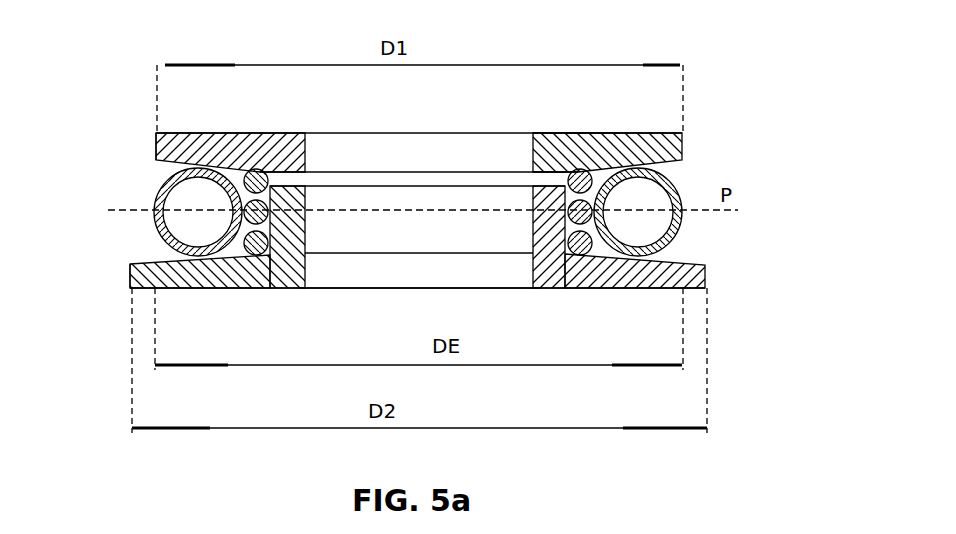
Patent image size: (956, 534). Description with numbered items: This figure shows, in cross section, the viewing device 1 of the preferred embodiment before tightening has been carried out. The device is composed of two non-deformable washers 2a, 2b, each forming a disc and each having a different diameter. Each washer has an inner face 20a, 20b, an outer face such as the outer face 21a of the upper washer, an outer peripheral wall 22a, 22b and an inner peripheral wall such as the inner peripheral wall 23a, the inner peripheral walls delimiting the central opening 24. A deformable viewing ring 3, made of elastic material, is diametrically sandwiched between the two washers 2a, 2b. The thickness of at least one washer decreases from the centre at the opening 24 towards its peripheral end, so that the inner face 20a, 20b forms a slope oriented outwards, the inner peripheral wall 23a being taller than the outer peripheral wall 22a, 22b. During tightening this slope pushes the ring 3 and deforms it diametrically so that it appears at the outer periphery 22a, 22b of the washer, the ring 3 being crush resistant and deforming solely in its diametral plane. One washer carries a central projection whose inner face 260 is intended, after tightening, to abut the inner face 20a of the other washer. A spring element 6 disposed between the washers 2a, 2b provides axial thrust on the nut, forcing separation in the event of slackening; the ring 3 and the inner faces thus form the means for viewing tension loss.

The viewing device 1 is at (439, 207).
The non-deformable washer 2a is at (422, 121).
The non-deformable washer 2b is at (395, 281).
The deformable viewing ring 3 is at (148, 191).
The spring element 6 is at (253, 178).
The inner face 20a is at (459, 147).
The inner face 20b is at (446, 263).
The outer face 21a is at (572, 133).
The outer peripheral wall 22a is at (155, 152).
The outer peripheral wall 22b is at (126, 267).
The inner peripheral wall 23a is at (532, 279).
The central opening 24 is at (392, 288).
The inner face of central projection 260 is at (550, 188).